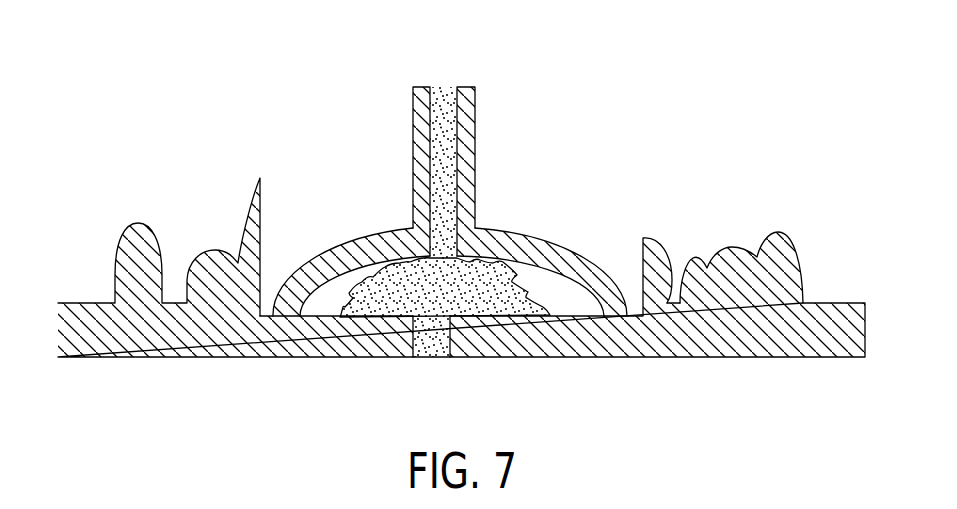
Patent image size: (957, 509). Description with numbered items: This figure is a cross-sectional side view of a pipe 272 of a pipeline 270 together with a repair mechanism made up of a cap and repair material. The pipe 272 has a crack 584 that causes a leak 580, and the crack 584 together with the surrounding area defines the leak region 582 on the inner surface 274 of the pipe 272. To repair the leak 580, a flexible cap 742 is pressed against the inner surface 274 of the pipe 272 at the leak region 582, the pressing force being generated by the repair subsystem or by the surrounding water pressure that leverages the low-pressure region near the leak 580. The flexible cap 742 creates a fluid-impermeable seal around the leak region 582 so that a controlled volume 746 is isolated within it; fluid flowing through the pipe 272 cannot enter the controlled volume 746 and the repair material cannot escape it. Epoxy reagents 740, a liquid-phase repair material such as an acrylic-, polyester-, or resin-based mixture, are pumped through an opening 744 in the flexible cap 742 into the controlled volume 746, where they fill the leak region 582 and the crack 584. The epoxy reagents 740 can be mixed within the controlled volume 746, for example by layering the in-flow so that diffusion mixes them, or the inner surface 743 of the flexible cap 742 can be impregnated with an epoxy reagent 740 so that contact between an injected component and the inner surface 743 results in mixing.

The pipeline 270 is at (573, 348).
The pipe 272 is at (642, 348).
The inner surface 274 is at (722, 252).
The leak 580 is at (435, 350).
The leak region 582 is at (273, 312).
The crack 584 is at (413, 337).
The epoxy reagents 740 is at (398, 290).
The flexible cap 742 is at (532, 233).
The inner surface of the flexible cap 743 is at (328, 311).
The opening 744 is at (467, 87).
The controlled volume 746 is at (561, 296).